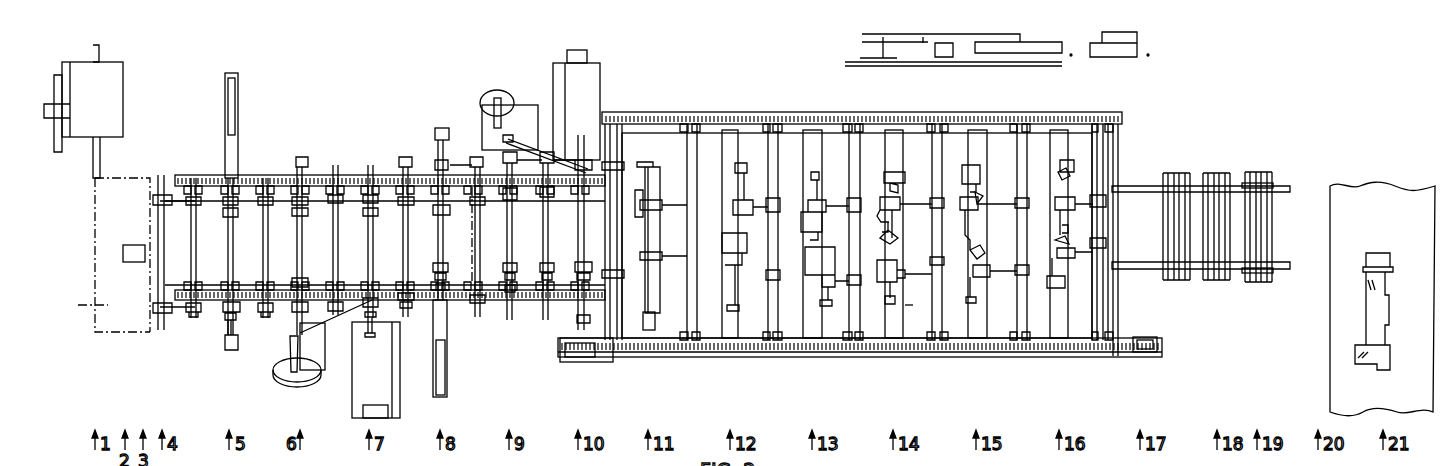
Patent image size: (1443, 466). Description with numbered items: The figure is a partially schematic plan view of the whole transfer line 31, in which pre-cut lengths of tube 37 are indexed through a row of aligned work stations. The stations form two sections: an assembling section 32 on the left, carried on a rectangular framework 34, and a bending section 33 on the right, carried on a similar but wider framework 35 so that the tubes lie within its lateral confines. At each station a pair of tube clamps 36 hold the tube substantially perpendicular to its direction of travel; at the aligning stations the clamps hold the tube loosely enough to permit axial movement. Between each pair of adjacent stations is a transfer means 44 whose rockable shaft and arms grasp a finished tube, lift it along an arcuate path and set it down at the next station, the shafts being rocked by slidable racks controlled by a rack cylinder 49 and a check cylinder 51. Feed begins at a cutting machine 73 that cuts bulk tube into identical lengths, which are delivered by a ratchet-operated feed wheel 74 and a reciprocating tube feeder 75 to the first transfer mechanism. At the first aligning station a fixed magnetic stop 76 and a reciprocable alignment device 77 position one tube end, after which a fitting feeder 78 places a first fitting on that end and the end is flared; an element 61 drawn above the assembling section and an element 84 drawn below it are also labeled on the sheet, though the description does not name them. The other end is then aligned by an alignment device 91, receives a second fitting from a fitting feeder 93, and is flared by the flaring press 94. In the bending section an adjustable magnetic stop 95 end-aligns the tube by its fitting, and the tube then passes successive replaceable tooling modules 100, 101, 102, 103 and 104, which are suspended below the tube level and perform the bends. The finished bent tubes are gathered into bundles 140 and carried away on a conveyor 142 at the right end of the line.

The transfer line 31 is at (675, 86).
The assembling section 32 is at (400, 113).
The bending section 33 is at (796, 92).
The rectangular framework 34 is at (492, 302).
The framework 35 is at (733, 357).
The tube clamps 36 is at (653, 184).
The tube 37 is at (170, 176).
The transfer means 44 is at (933, 309).
The rack cylinder 49 is at (1146, 353).
The check cylinder 51 is at (576, 348).
The stop block 61 is at (442, 128).
The cutting machine 73 is at (112, 82).
The ratchet-operated feed wheel 74 is at (99, 255).
The reciprocating tube feeder 75 is at (136, 245).
The fixed magnetic stop 76 is at (447, 216).
The reciprocable alignment device 77 is at (236, 96).
The fitting feeder 78 is at (318, 378).
The actuator housing 84 is at (362, 390).
The alignment device 91 is at (447, 383).
The fitting feeder 93 is at (497, 94).
The flaring press 94 is at (587, 80).
The adjustable magnetic stop 95 is at (649, 331).
The tooling module 100 is at (746, 146).
The tooling module 101 is at (832, 150).
The tooling module 102 is at (906, 150).
The tooling module 103 is at (991, 149).
The tooling module 104 is at (1077, 155).
The bundles 140 is at (1372, 315).
The conveyor 142 is at (1345, 392).